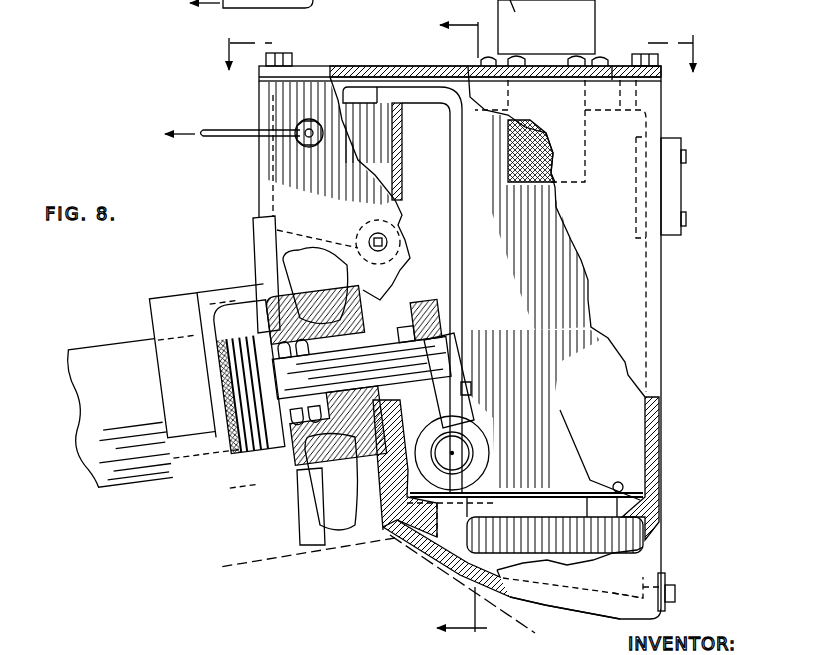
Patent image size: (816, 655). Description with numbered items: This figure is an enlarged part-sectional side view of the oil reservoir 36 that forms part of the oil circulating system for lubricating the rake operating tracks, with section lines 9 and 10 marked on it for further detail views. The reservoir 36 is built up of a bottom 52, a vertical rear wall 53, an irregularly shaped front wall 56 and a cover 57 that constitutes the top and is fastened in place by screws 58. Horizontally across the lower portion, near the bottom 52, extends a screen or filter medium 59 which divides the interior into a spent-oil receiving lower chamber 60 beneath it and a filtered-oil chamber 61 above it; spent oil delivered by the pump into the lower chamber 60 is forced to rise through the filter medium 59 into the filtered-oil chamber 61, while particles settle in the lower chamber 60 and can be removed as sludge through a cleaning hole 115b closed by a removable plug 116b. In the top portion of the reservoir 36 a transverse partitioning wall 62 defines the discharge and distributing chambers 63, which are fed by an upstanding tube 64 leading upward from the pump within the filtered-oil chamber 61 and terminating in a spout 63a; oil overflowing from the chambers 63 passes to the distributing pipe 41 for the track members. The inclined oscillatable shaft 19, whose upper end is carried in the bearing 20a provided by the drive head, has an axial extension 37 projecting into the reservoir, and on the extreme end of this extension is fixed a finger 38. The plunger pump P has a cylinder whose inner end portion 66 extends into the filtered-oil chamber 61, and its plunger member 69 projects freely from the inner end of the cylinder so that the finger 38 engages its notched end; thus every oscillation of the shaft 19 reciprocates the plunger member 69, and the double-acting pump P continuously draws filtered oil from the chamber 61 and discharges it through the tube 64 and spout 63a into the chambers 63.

The section line 9- 9 is at (461, 54).
The section line 10- 10 is at (462, 327).
The oscillatable shaft 19 is at (77, 393).
The upper bearing 20a is at (162, 321).
The oil reservoir 36 is at (665, 290).
The axial extension 37 is at (380, 350).
The finger 38 is at (466, 435).
The distributing pipe 41 is at (238, 128).
The bottom 52 is at (588, 609).
The vertical rear wall 53 is at (658, 430).
The front wall 56 is at (263, 184).
The cover 57 is at (618, 72).
The screws 58 is at (286, 53).
The filter medium 59 is at (553, 493).
The spent-oil receiving lower chamber 60 is at (625, 532).
The filtered-oil chamber 61 is at (625, 456).
The transverse partitioning wall 62 is at (400, 172).
The discharge and distributing chambers 63 is at (378, 138).
The spout 63a is at (358, 92).
The upstanding tube 64 is at (462, 237).
The inner end portion of cylinder 66 is at (491, 457).
The plunger member 69 is at (476, 450).
The plunger pump P is at (482, 413).
The cleaning hole 115b is at (643, 588).
The removable plug 116b is at (676, 594).